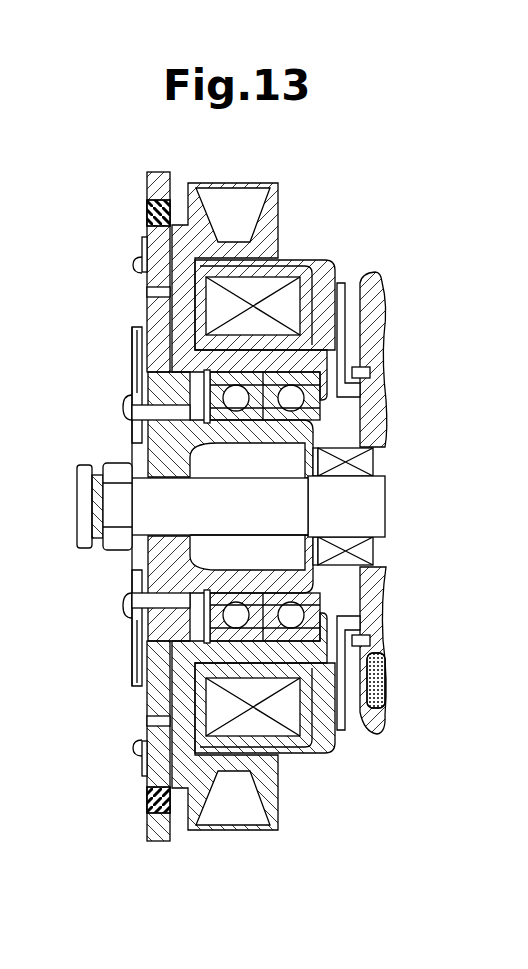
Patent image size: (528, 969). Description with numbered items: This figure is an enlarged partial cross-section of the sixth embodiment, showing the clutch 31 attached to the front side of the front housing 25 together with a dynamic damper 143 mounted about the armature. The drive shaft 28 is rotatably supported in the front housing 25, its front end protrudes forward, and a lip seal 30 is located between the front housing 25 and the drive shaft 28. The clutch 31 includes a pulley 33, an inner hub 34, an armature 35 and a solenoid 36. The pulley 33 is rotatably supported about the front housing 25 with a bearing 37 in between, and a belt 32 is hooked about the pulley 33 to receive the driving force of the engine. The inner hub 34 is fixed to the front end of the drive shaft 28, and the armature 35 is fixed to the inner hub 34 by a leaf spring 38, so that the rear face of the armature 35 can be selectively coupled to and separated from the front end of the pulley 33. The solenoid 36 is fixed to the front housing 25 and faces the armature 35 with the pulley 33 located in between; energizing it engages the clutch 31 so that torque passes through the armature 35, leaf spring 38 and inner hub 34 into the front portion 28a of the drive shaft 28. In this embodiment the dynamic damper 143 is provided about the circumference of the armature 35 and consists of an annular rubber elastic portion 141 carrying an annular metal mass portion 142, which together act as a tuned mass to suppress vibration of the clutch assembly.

The front housing 25 is at (377, 590).
The drive shaft 28 is at (277, 492).
The front portion of the drive shaft 28a is at (257, 525).
The lip seal 30 is at (345, 470).
The clutch 31 is at (343, 206).
The belt 32 is at (218, 192).
The pulley 33 is at (280, 200).
The inner hub 34 is at (143, 438).
The armature 35 is at (142, 250).
The solenoid 36 is at (323, 263).
The bearing 37 is at (230, 405).
The leaf spring 38 is at (132, 357).
The annular rubber elastic portion 141 is at (148, 208).
The annular metal mass portion 142 is at (156, 184).
The dynamic damper 143 is at (99, 500).